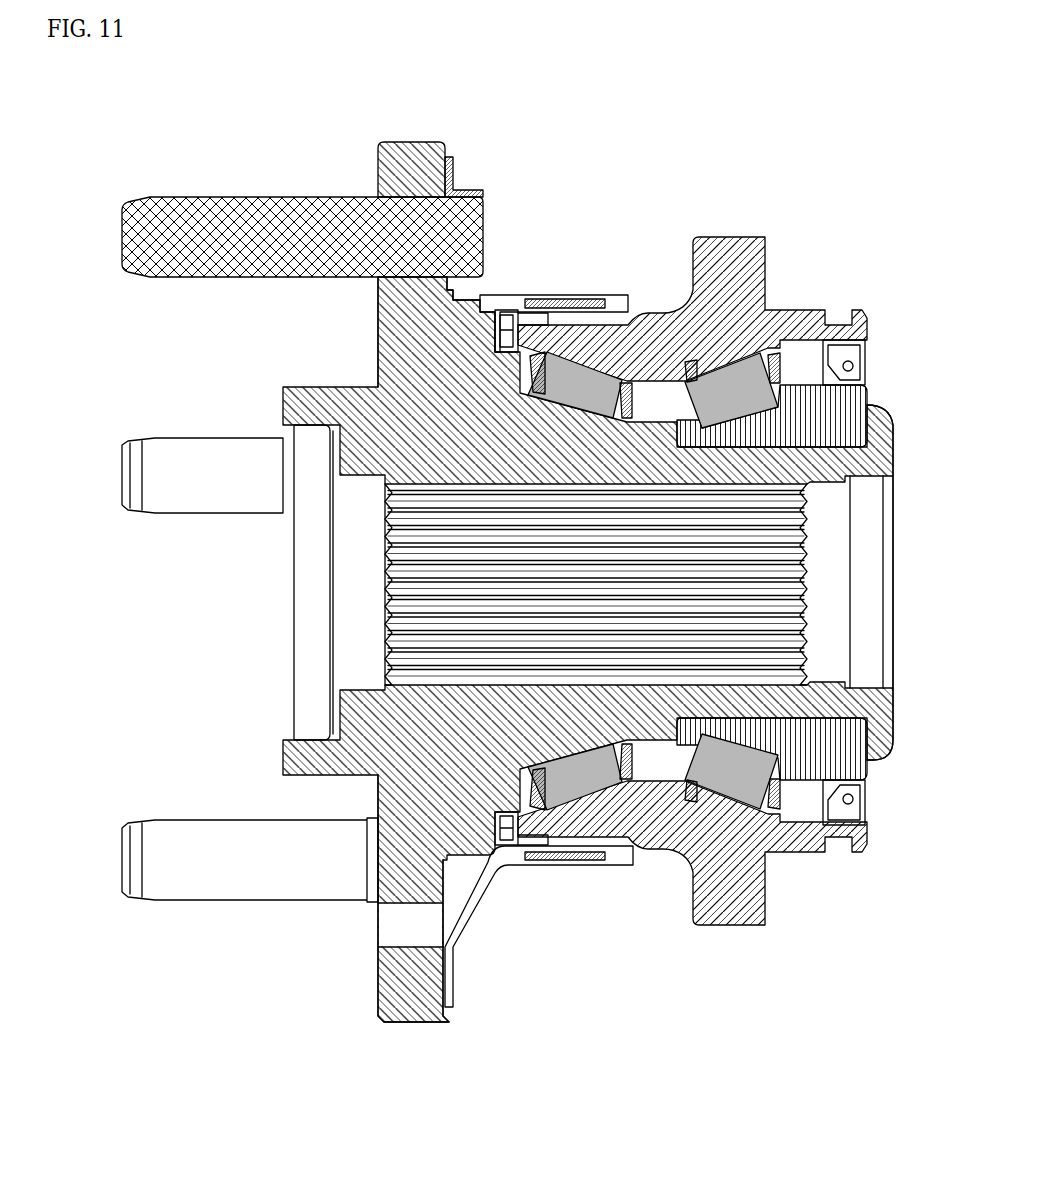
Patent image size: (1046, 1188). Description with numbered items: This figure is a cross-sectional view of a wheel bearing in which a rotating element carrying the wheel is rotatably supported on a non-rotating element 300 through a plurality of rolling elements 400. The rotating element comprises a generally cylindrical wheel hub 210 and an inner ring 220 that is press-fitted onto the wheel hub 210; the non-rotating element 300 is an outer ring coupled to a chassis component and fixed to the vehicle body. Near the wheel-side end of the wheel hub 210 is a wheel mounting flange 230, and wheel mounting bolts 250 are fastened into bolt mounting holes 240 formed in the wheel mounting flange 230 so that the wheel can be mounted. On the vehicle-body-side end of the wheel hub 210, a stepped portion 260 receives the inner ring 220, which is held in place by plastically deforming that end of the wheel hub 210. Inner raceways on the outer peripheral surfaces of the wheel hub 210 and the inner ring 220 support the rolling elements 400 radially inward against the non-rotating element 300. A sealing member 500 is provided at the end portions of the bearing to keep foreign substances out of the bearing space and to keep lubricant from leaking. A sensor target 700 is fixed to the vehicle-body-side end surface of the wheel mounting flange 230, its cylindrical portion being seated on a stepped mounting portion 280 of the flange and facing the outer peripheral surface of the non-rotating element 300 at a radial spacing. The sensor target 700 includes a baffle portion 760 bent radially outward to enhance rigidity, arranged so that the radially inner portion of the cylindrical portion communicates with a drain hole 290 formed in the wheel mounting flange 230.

The wheel hub 210 is at (370, 453).
The inner ring 220 is at (855, 398).
The wheel mounting flange 230 is at (380, 317).
The bolt mounting hole 240 is at (403, 193).
The wheel mounting bolt 250 is at (198, 197).
The stepped portion 260 is at (825, 447).
The stepped mounting portion 280 is at (457, 305).
The drain hole 290 is at (390, 927).
The non-rotating element 300 is at (780, 317).
The rolling elements 400 is at (713, 778).
The sealing member 500 is at (508, 327).
The sensor target 700 is at (453, 170).
The baffle portion 760 is at (480, 907).